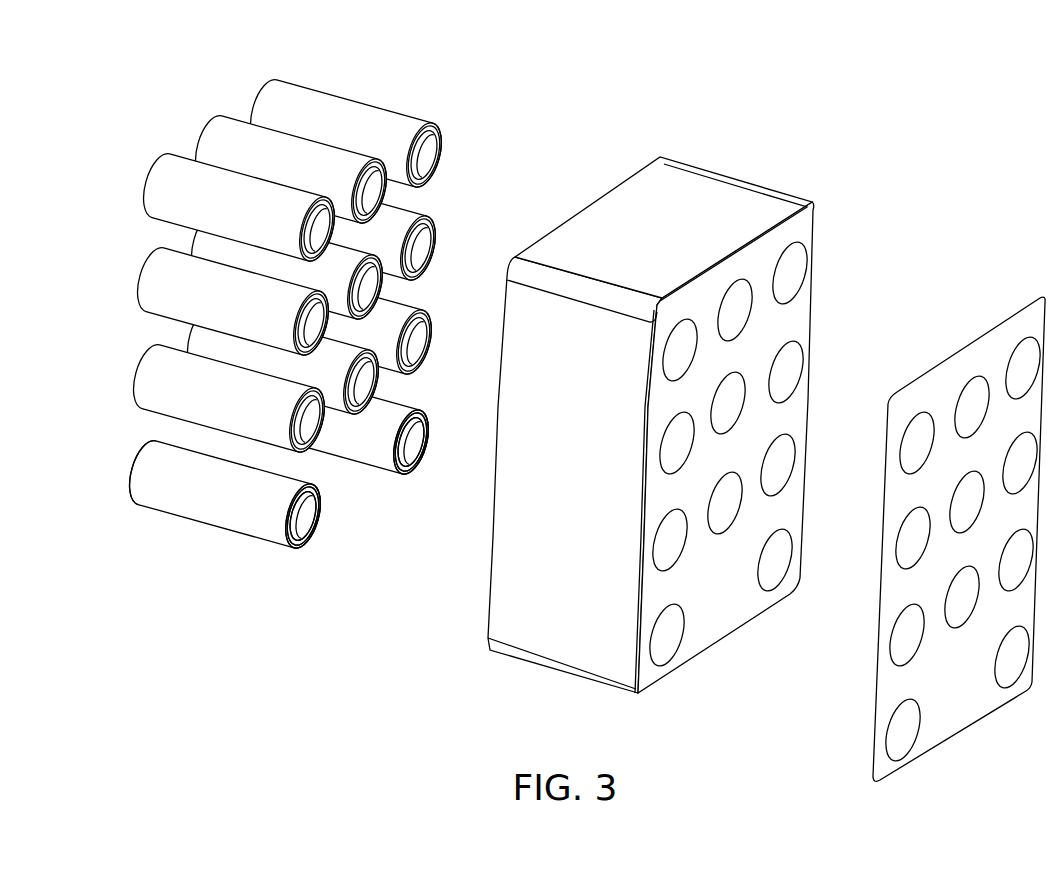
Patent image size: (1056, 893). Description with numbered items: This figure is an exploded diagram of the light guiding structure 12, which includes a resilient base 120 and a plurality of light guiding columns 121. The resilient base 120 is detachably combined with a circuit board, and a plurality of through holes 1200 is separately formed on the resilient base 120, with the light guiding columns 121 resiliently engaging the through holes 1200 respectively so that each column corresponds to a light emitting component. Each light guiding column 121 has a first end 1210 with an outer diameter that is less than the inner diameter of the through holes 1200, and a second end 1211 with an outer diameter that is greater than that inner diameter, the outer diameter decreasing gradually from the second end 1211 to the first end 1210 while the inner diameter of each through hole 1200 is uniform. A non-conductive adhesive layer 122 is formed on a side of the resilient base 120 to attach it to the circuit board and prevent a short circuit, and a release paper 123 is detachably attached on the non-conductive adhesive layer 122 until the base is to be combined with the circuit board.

The light guiding structure 12 is at (942, 107).
The resilient base 120 is at (548, 610).
The light guiding column 121 is at (222, 502).
The first end 1210 is at (133, 490).
The second end 1211 is at (298, 548).
The non-conductive adhesive layer 122 is at (798, 226).
The through hole 1200 is at (806, 278).
The release paper 123 is at (996, 352).